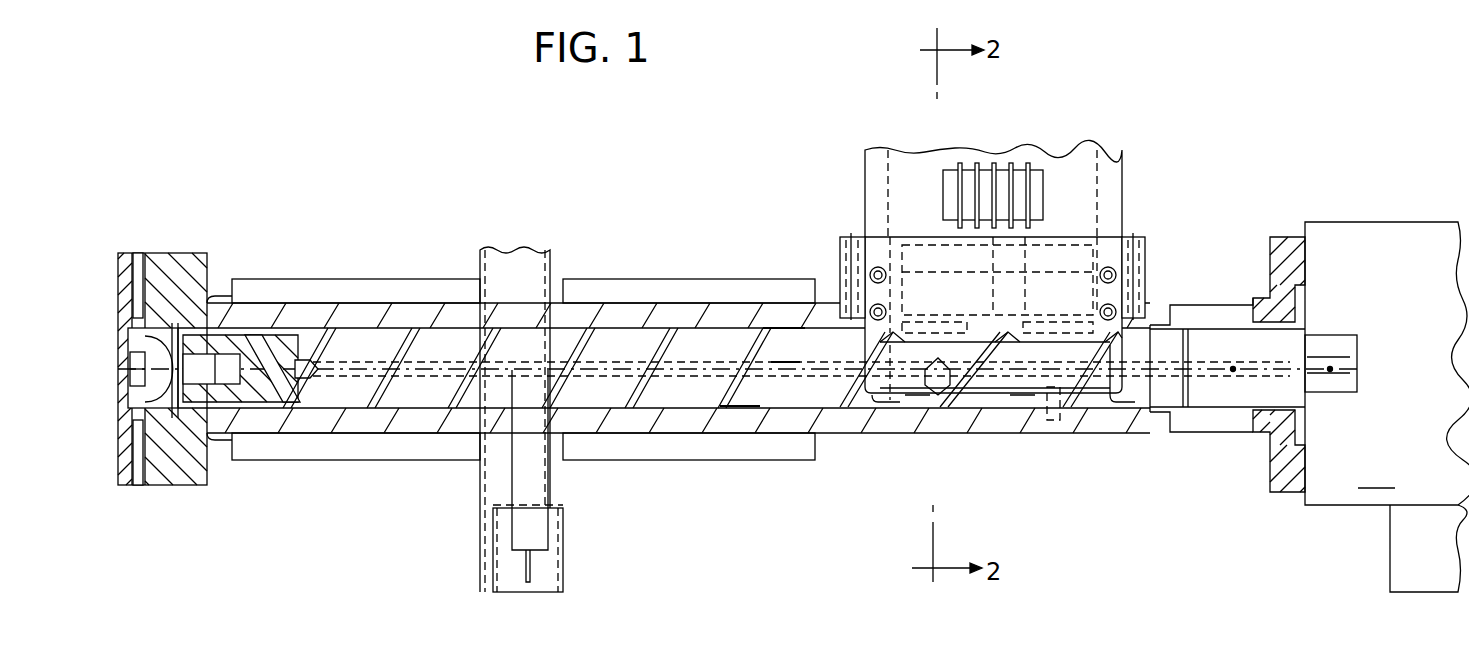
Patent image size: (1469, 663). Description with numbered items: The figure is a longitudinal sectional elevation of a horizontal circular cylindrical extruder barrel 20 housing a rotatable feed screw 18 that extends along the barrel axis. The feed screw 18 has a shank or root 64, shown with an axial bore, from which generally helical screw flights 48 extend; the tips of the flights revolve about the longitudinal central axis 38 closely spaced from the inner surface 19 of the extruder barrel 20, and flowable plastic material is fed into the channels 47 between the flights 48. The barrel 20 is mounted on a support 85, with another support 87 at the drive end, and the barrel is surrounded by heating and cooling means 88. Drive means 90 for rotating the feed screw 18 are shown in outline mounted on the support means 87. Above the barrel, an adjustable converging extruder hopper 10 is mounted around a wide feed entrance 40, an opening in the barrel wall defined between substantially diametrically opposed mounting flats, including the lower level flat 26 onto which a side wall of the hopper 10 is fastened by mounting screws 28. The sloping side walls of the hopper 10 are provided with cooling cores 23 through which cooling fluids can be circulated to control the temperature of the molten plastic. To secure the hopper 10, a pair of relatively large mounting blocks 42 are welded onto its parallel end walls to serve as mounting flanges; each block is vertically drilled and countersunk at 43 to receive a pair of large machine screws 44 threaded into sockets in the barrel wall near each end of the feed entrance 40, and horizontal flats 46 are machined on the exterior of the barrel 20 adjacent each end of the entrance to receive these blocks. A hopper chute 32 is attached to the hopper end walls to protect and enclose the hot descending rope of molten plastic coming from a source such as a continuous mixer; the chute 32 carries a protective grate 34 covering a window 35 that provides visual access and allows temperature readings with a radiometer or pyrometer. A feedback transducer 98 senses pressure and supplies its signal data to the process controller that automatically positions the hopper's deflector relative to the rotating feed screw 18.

The adjustable converging extruder hopper 10 is at (1076, 230).
The feed screw 18 is at (430, 414).
The inner surface of the extruder barrel 19 is at (801, 325).
The extruder barrel 20 is at (430, 296).
The cooling cores 23 is at (890, 310).
The lower level mounting flat 26 is at (880, 412).
The mounting screws 28 is at (1048, 420).
The hopper chute 32 is at (1128, 155).
The protective grate 34 is at (1011, 170).
The window 35 is at (1040, 192).
The longitudinal central axis 38 is at (790, 380).
The feed entrance 40 is at (1152, 305).
The mounting blocks 42 is at (840, 268).
The countersunk drilled holes 43 is at (1180, 228).
The large machine screws 44 is at (850, 240).
The horizontal flats 46 is at (838, 315).
The channels 47 is at (915, 397).
The screw flights 48 is at (945, 396).
The shank or root 64 is at (752, 398).
The support 85 is at (550, 580).
The support means 87 is at (1395, 578).
The heating and cooling means 88 is at (311, 290).
The drive means 90 is at (1387, 363).
The feedback transducer 98 is at (160, 310).